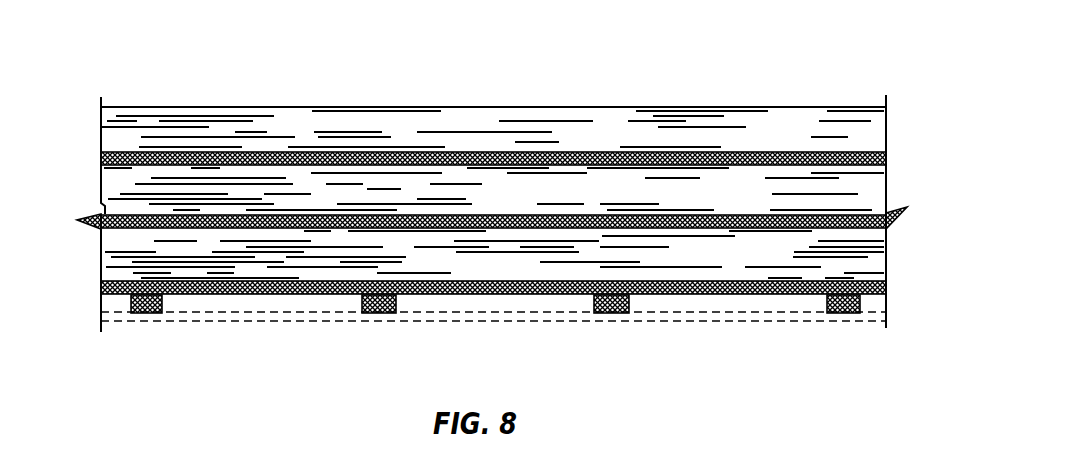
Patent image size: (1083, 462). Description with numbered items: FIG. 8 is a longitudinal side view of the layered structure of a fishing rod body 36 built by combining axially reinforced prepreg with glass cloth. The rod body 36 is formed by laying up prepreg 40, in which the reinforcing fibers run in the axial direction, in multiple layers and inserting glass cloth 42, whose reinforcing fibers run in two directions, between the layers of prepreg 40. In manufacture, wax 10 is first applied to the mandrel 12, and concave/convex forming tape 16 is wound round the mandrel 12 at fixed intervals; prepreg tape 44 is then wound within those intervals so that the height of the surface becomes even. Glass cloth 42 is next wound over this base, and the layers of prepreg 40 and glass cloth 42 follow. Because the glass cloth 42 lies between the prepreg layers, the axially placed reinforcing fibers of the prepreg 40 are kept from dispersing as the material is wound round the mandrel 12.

The wax 10 is at (765, 320).
The mandrel 12 is at (875, 328).
The concave/convex forming tape 16 is at (268, 307).
The fishing rod body 36 is at (322, 103).
The prepreg 40 is at (548, 250).
The glass cloth 42 is at (668, 283).
The prepreg tape 44 is at (146, 314).